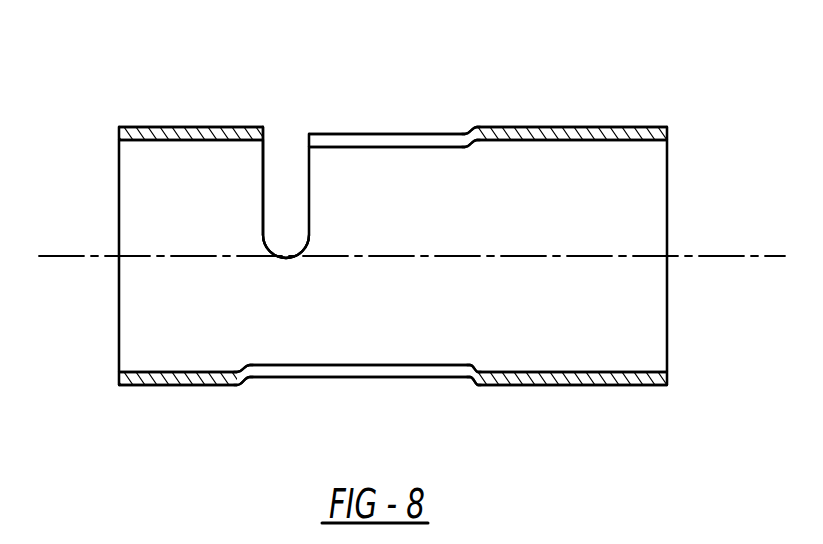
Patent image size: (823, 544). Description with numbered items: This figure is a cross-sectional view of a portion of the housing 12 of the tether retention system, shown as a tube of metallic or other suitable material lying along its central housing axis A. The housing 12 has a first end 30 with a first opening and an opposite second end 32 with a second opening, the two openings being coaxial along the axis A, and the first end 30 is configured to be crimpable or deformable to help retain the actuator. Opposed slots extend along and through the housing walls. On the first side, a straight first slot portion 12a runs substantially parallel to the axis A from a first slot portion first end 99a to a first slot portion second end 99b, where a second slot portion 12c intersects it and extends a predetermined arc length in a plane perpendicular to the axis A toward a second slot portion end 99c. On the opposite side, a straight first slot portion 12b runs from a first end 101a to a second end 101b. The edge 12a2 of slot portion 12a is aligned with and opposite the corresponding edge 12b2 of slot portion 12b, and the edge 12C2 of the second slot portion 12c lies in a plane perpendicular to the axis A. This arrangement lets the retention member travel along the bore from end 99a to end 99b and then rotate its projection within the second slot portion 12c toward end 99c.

The housing 12 is at (667, 340).
The first end 30 is at (638, 127).
The second end 32 is at (130, 127).
The first slot portion 12a is at (357, 134).
The edge of first slot portion 12a2 is at (397, 145).
The first slot portion 12b is at (303, 379).
The edge of first slot portion 12b2 is at (383, 380).
The second slot portion 12c is at (292, 197).
The edge of second slot portion 12C2 is at (262, 182).
The first slot portion first end 99a is at (468, 133).
The first slot portion second end 99b is at (287, 140).
The second slot portion end 99c is at (283, 242).
The first slot portion first end 101a is at (467, 387).
The first slot portion second end 101b is at (246, 385).
The housing axis A is at (700, 257).